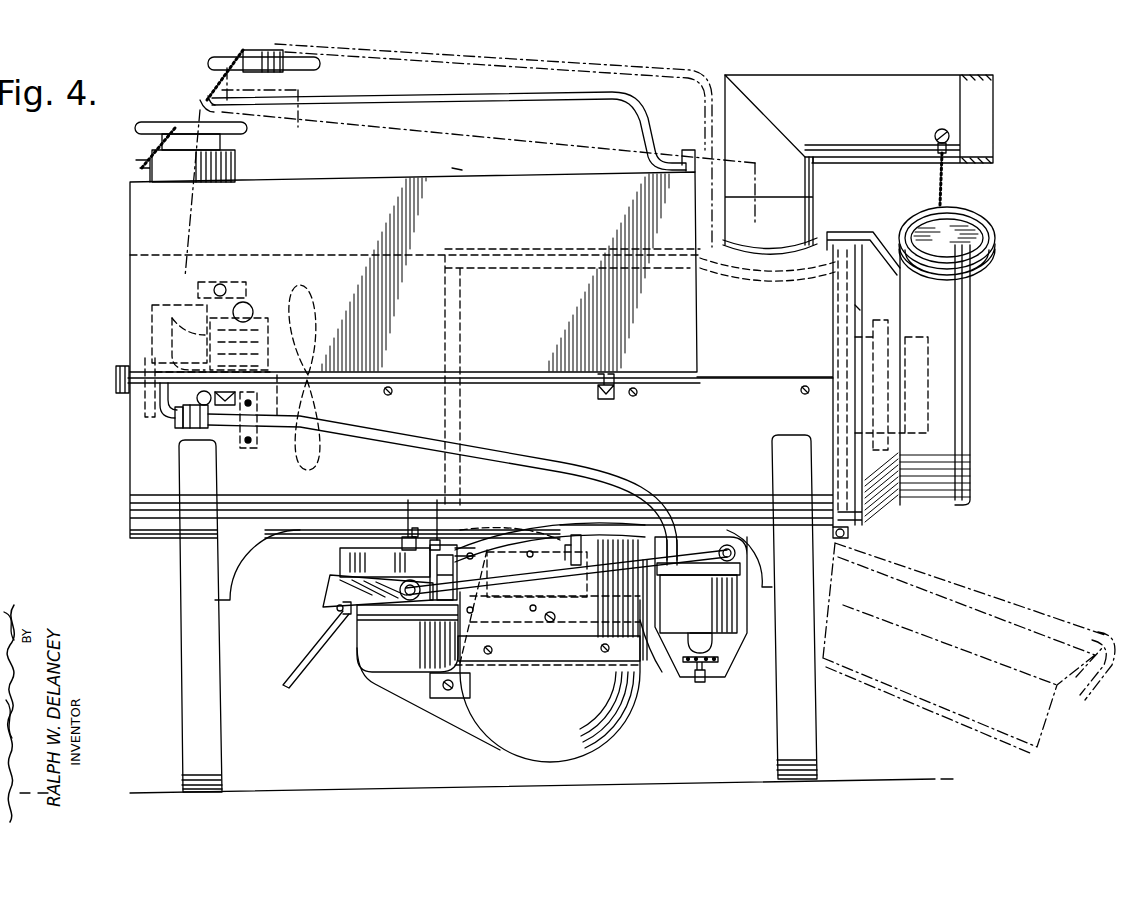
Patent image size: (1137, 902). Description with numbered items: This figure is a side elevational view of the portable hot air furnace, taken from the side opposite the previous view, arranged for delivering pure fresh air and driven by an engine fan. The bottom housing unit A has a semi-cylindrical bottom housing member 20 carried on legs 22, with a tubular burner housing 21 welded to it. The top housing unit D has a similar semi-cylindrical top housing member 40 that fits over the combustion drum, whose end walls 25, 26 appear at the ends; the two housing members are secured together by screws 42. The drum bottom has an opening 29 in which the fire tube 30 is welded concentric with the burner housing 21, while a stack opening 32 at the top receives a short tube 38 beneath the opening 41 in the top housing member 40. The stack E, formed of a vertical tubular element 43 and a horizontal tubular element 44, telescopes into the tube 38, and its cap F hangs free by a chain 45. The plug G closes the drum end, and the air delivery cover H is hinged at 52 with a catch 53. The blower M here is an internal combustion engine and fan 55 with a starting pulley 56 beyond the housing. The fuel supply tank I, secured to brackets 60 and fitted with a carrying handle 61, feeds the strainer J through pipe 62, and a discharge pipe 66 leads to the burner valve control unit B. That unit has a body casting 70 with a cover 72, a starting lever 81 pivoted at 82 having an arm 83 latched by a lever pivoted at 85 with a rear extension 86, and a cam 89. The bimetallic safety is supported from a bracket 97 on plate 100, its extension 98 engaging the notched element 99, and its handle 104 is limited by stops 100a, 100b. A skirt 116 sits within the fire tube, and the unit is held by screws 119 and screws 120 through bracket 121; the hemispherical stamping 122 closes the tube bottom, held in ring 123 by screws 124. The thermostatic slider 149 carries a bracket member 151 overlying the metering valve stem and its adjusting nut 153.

The bottom housing member 20 is at (150, 441).
The tubular burner housing 21 is at (642, 648).
The legs 22 is at (187, 632).
The end wall 25 is at (443, 320).
The end wall 26 is at (866, 311).
The opening 29 is at (512, 530).
The fire tube 30 is at (528, 556).
The stack opening 32 is at (740, 268).
The short tube 38 is at (743, 215).
The top housing member 40 is at (775, 343).
The opening 41 is at (745, 246).
The screws 42 is at (800, 390).
The vertical tubular element 43 is at (790, 182).
The horizontal tubular element 44 is at (832, 92).
The chain 45 is at (948, 202).
The hinge 52 is at (848, 536).
The catch 53 is at (840, 232).
The internal combustion engine and fan 55 is at (157, 332).
The starting pulley 56 is at (117, 386).
The brackets 60 is at (225, 405).
The handle 61 is at (372, 98).
The pipe 62 is at (400, 432).
The discharge pipe 66 is at (690, 520).
The body casting 70 is at (360, 665).
The cover 72 is at (390, 610).
The starting lever 81 is at (313, 643).
The pivot 82 is at (342, 613).
The arm 83 is at (340, 584).
The pivot 85 is at (485, 548).
The rear extension 86 is at (444, 540).
The cam 89 is at (338, 556).
The bracket 97 is at (547, 622).
The extension 98 is at (485, 576).
The notched element 99 is at (407, 563).
The plate 100 is at (466, 612).
The stop 100a is at (590, 555).
The stop 100b is at (655, 628).
The handle 104 is at (572, 560).
The skirt 116 is at (472, 613).
The screws 119 is at (537, 612).
The screws 120 is at (437, 684).
The bracket 121 is at (450, 697).
The hemispherical stamping 122 is at (600, 723).
The ring 123 is at (582, 662).
The screws 124 is at (488, 656).
The slider 149 is at (466, 547).
The bracket member 151 is at (414, 528).
The adjusting nut 153 is at (404, 537).
The bottom housing unit A is at (130, 494).
The burner valve control unit B is at (382, 690).
The top housing unit D is at (712, 360).
The stack E is at (888, 70).
The cap F is at (993, 219).
The plug G is at (935, 380).
The air delivery cover H is at (981, 333).
The fuel supply tank I is at (462, 166).
The strainer J is at (759, 627).
The blower M is at (241, 272).